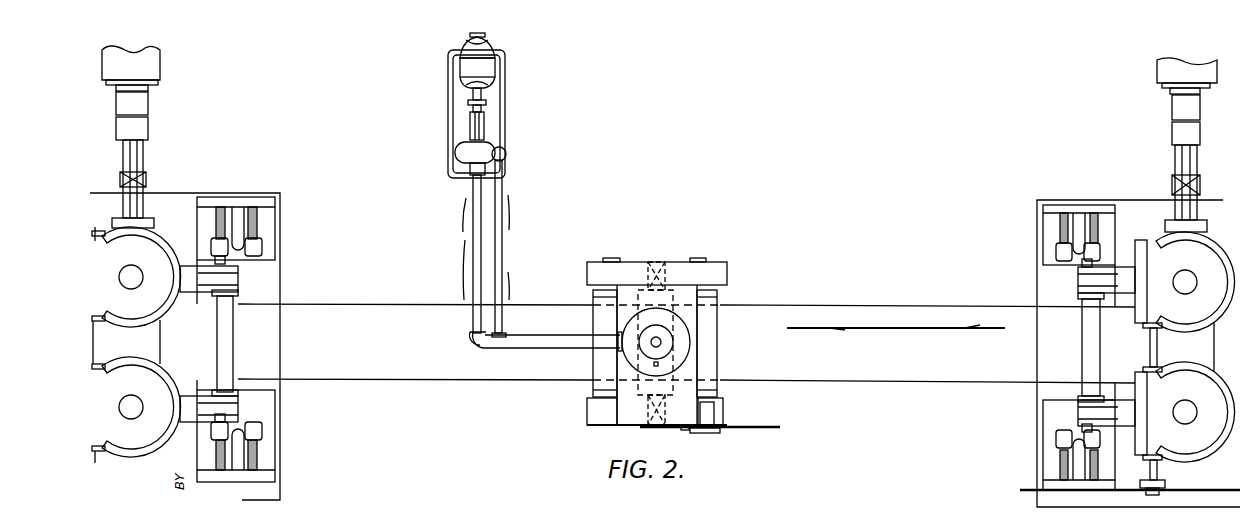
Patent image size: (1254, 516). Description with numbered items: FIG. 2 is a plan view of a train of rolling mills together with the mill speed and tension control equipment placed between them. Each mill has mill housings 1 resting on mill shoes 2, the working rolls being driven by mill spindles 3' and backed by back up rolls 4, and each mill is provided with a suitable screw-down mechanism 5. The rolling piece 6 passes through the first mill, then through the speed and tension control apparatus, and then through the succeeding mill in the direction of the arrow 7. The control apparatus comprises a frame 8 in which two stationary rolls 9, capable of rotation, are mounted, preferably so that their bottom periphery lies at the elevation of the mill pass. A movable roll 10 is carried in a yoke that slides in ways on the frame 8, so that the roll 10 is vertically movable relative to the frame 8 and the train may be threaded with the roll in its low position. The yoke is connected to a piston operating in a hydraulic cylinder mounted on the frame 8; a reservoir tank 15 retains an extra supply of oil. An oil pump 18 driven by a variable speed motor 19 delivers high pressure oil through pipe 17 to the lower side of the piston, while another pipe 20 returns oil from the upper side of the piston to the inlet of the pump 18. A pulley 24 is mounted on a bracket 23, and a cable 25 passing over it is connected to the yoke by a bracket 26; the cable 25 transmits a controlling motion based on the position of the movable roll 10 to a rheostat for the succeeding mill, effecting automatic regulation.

The mill housing 1 is at (657, 346).
The mill shoe 2 is at (262, 215).
The mill spindle 3' is at (659, 139).
The back up roll 4 is at (162, 336).
The screw-down mechanism 5 is at (668, 344).
The rolling piece 6 is at (686, 343).
The arrow 7 is at (912, 327).
The frame 8 is at (718, 268).
The stationary roll 9 is at (600, 297).
The movable roll 10 is at (666, 343).
The reservoir tank 15 is at (668, 332).
The pipe 17 is at (497, 194).
The oil pump 18 is at (480, 150).
The variable speed motor 19 is at (490, 68).
The pipe 20 is at (475, 318).
The bracket 23 is at (718, 410).
The pulley 24 is at (722, 433).
The cable 25 is at (760, 432).
The bracket 26 is at (686, 431).